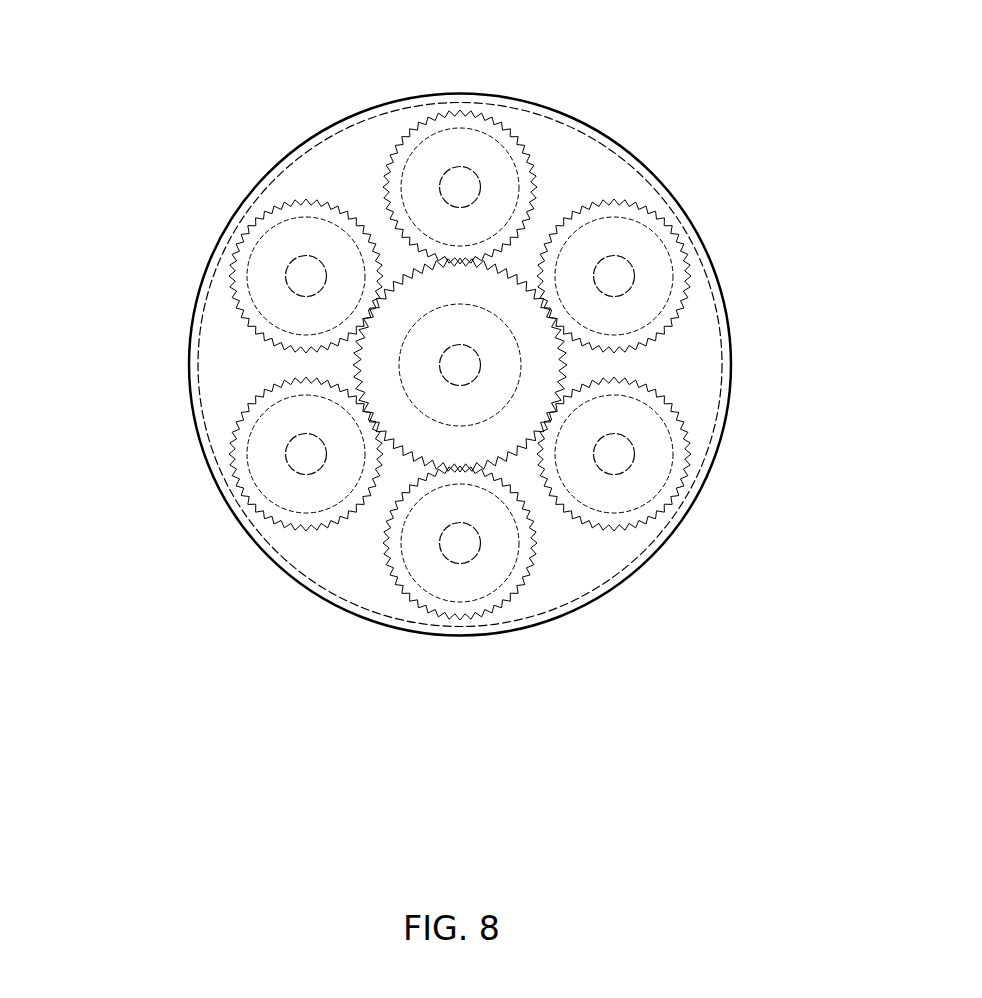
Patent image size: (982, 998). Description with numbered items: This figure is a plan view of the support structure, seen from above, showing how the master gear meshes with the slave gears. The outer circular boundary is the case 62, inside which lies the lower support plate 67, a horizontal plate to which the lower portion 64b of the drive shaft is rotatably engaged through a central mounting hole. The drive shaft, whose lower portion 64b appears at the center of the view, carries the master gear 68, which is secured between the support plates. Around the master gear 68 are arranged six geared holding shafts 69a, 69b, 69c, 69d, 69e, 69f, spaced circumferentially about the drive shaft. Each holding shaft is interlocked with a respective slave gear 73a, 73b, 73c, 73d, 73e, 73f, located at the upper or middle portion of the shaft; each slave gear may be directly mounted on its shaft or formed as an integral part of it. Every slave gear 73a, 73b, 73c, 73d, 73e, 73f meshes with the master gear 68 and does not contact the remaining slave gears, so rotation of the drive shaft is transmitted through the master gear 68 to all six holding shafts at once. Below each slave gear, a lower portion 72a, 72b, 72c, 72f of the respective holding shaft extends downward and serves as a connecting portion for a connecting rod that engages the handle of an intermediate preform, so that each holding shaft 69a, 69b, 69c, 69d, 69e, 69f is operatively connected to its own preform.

The case 62 is at (253, 527).
The lower support plate 67 is at (565, 573).
The master gear 68 is at (408, 438).
The lower portion of the drive shaft 64b is at (467, 357).
The geared holding shaft 69a is at (645, 530).
The geared holding shaft 69b is at (655, 212).
The geared holding shaft 69c is at (397, 133).
The geared holding shaft 69d is at (260, 210).
The geared holding shaft 69e is at (240, 406).
The geared holding shaft 69f is at (522, 597).
The lower portion of the holding shaft 72a is at (622, 450).
The lower portion of the holding shaft 72b is at (622, 282).
The lower portion of the holding shaft 72c is at (466, 179).
The lower portion of the holding shaft 72f is at (465, 552).
The slave gear 73a is at (668, 495).
The slave gear 73b is at (678, 259).
The slave gear 73c is at (453, 147).
The slave gear 73d is at (262, 268).
The slave gear 73e is at (263, 471).
The slave gear 73f is at (442, 597).